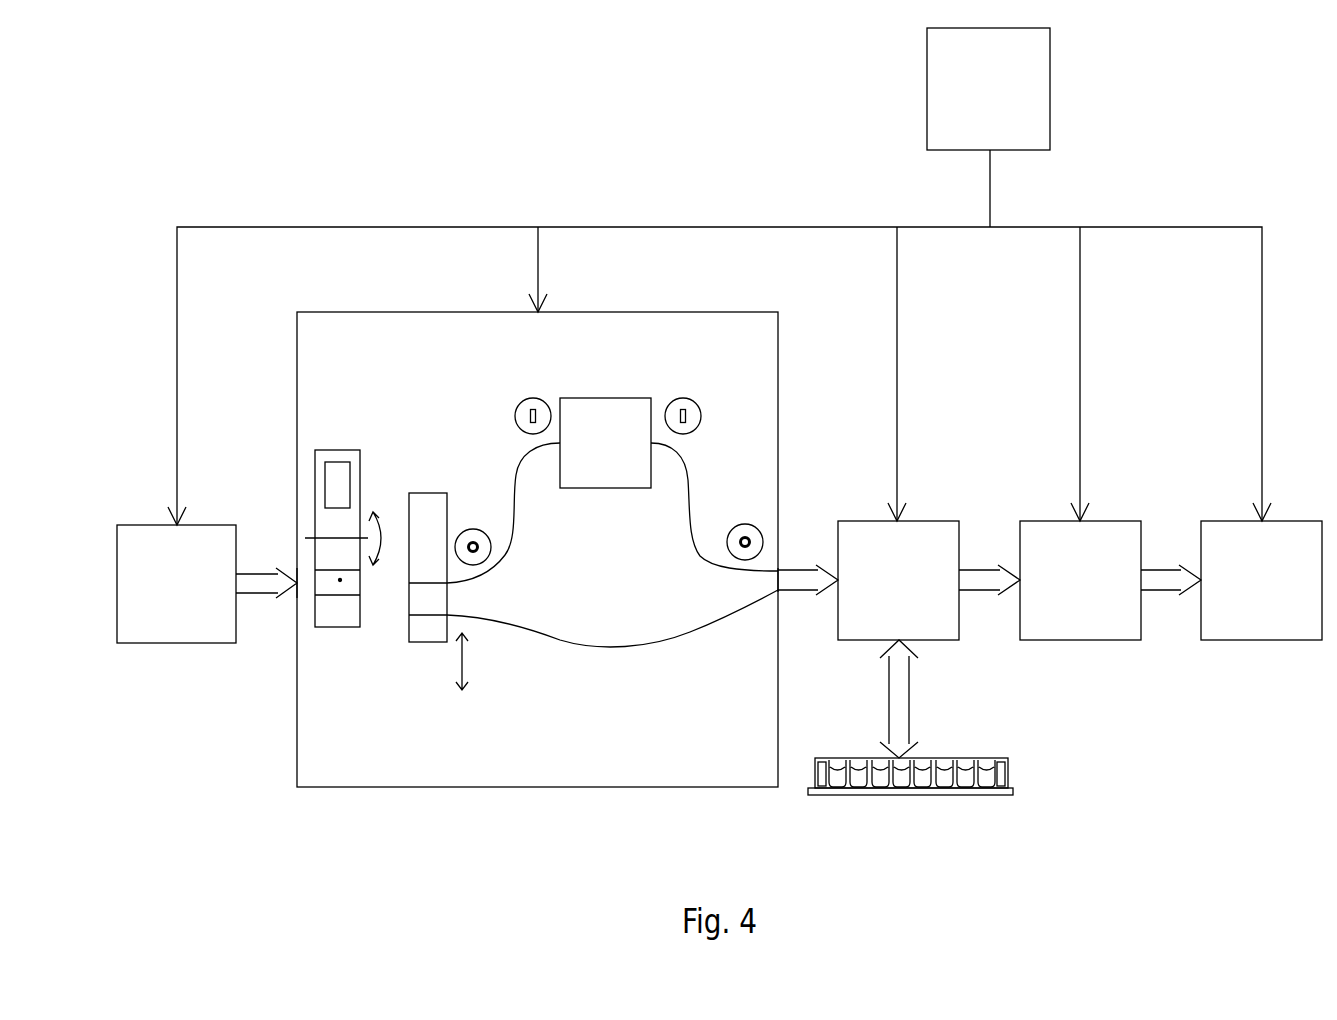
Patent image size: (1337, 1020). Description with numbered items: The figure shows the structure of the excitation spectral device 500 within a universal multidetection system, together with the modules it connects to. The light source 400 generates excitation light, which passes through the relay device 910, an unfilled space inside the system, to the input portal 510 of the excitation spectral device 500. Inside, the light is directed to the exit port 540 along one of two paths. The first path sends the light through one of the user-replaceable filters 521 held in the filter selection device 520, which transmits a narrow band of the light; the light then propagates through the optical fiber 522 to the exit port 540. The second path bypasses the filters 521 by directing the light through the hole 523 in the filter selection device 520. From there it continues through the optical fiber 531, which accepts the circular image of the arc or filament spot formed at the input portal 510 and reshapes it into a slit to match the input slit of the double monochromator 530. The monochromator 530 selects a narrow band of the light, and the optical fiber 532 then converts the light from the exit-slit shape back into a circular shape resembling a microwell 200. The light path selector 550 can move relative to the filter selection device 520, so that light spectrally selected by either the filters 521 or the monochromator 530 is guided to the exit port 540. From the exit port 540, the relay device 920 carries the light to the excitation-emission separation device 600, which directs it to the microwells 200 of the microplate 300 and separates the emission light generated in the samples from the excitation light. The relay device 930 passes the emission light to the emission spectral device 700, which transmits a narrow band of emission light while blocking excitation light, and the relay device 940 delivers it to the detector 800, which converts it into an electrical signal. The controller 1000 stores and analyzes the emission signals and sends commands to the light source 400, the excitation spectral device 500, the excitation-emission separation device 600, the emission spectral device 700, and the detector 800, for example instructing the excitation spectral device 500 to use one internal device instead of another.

The microwells 200 is at (987, 767).
The microplate 300 is at (1005, 793).
The light source 400 is at (176, 584).
The excitation spectral device 500 is at (504, 787).
The input portal 510 is at (296, 583).
The filter selection device 520 is at (325, 450).
The filters 521 is at (342, 462).
The optical fiber 522 is at (603, 647).
The hole 523 is at (340, 580).
The double monochromator 530 is at (590, 398).
The optical fiber 531 is at (512, 517).
The optical fiber 532 is at (688, 480).
The exit port 540 is at (777, 590).
The light path selector 550 is at (425, 642).
The excitation-emission separation device 600 is at (898, 580).
The emission spectral device 700 is at (1080, 580).
The detector 800 is at (1261, 580).
The relay device 910 is at (266, 604).
The relay device 920 is at (808, 599).
The relay device 930 is at (989, 598).
The relay device 940 is at (1171, 600).
The controller 1000 is at (988, 89).